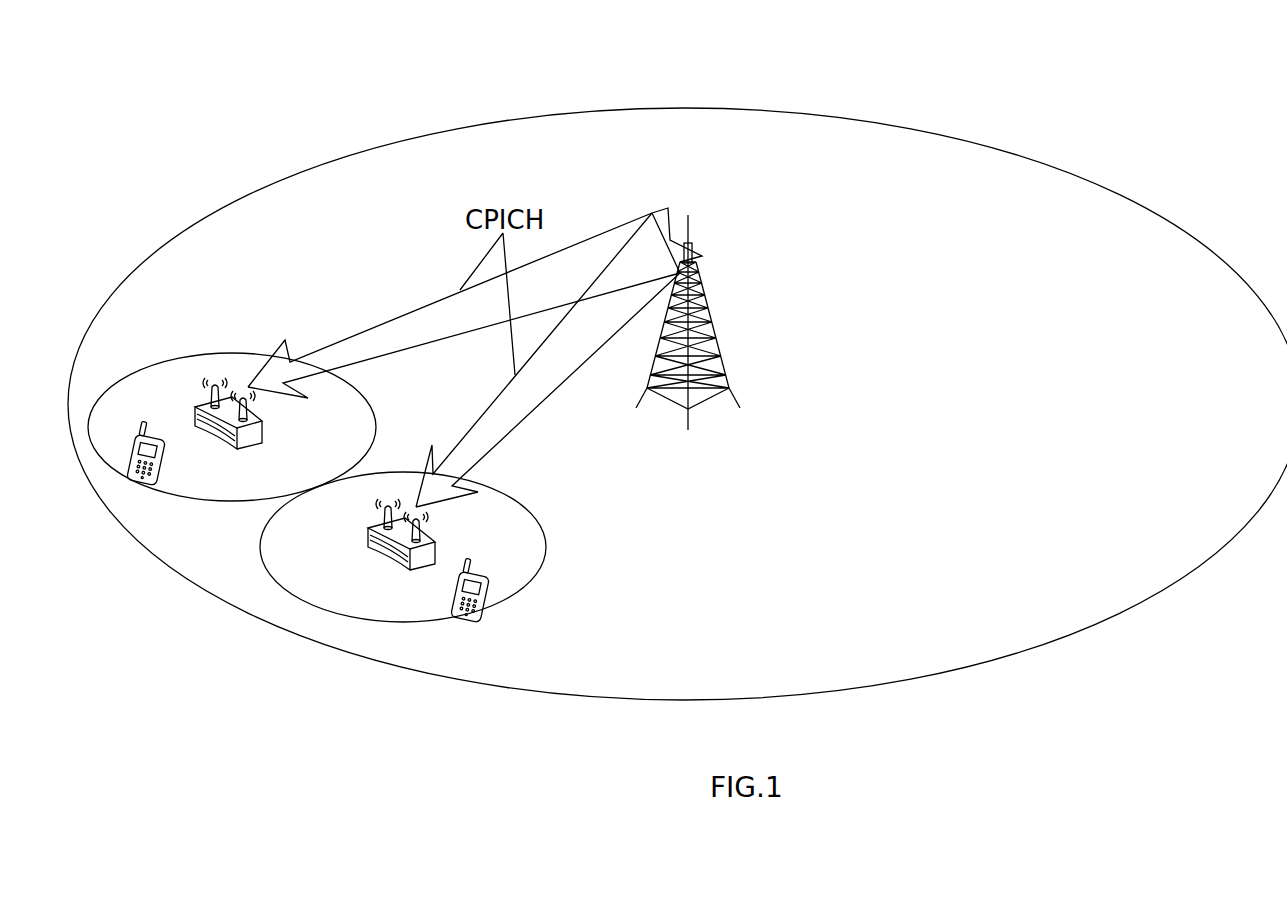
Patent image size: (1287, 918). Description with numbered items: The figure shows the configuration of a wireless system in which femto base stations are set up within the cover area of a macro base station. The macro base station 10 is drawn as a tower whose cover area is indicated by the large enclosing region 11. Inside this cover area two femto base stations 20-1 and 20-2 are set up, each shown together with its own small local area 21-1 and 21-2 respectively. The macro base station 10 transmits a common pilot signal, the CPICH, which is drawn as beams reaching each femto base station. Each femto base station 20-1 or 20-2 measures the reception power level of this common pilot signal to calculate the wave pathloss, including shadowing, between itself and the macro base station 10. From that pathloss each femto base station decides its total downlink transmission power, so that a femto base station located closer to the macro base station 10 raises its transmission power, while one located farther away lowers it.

The macro base station 10 is at (708, 320).
The macro cell 11 is at (635, 110).
The femto base station 20-1 is at (213, 390).
The femto base station 20-2 is at (428, 536).
The small cell 21-1 is at (213, 353).
The small cell 21-2 is at (360, 620).